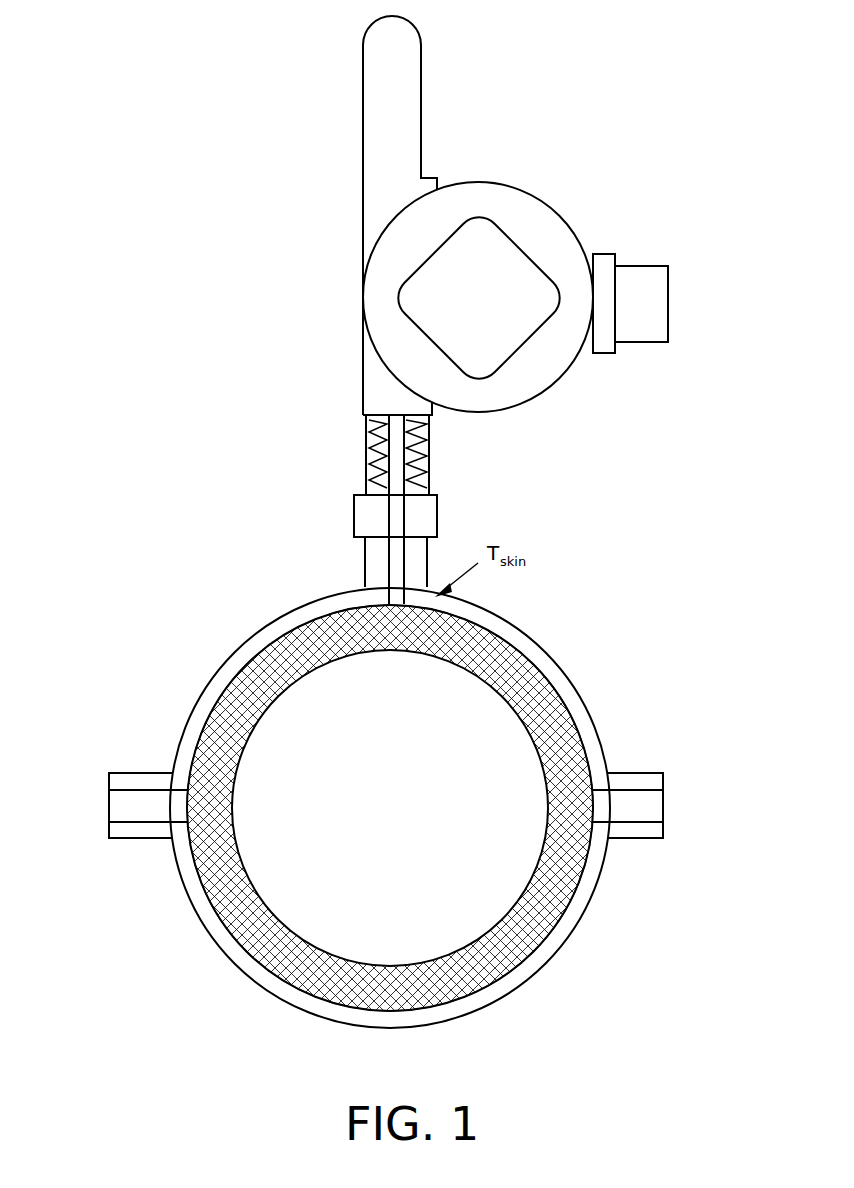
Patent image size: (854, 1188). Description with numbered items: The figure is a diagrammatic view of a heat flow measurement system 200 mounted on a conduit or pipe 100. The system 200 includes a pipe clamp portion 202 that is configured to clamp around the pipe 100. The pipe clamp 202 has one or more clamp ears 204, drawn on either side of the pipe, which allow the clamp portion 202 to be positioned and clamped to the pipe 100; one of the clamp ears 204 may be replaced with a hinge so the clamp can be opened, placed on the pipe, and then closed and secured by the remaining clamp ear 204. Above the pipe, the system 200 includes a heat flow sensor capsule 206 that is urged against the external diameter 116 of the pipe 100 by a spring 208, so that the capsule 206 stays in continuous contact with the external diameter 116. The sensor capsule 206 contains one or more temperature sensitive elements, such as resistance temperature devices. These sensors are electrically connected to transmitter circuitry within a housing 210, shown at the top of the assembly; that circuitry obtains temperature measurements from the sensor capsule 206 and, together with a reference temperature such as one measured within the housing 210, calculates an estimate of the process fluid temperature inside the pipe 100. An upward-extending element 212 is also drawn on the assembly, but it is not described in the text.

The pipe 100 is at (540, 928).
The external diameter 116 is at (492, 632).
The heat flow measurement system 200 is at (549, 309).
The pipe clamp portion 202 is at (528, 630).
The clamp ears 204 is at (128, 838).
The heat flow sensor capsule 206 is at (398, 577).
The spring 208 is at (427, 450).
The housing 210 is at (570, 225).
The sensor tube / extension 212 is at (422, 82).